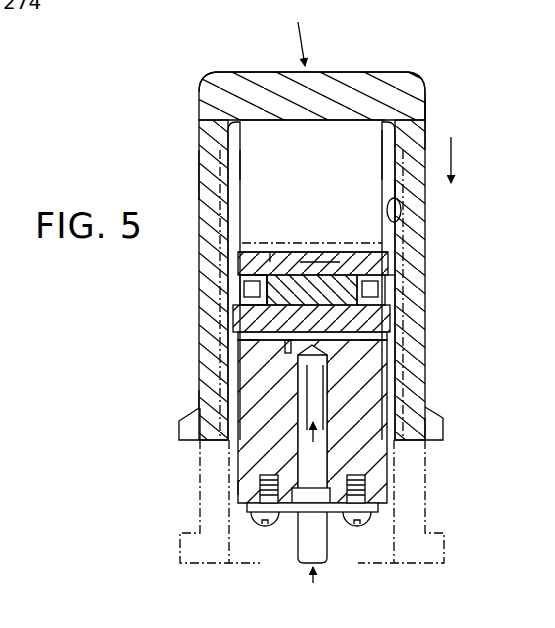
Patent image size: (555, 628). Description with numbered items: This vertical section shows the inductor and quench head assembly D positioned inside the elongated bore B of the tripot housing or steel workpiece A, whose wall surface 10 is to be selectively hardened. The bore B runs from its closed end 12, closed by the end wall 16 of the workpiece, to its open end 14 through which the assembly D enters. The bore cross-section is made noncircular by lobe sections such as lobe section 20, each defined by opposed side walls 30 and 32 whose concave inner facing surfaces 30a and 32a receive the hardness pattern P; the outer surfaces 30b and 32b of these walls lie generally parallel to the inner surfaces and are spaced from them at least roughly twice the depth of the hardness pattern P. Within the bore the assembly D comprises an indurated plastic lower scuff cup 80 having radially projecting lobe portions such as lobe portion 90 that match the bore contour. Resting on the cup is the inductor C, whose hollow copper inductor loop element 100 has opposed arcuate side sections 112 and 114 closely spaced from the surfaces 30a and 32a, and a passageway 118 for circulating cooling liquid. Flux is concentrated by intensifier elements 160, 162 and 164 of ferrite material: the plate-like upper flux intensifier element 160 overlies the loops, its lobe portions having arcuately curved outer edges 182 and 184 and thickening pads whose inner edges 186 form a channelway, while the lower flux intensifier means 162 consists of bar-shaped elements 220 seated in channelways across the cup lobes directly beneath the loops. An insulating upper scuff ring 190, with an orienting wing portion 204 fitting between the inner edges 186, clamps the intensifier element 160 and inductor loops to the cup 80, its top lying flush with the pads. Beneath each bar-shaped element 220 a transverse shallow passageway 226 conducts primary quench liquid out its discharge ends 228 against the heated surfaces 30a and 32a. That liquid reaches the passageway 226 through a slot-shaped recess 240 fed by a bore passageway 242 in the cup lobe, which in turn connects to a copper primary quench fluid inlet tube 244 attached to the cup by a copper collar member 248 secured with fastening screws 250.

The workpiece A is at (292, 33).
The elongated bore B is at (387, 138).
The inductor C is at (430, 296).
The inductor and quench head assembly D is at (230, 487).
The hardness pattern P is at (222, 398).
The wall surface 10 is at (402, 210).
The closed end 12 is at (226, 132).
The open end 14 is at (230, 452).
The end wall 16 is at (262, 80).
The lobe section 20 is at (325, 130).
The side wall 30 is at (205, 195).
The inner facing surface 30a is at (243, 165).
The outer surface 30b is at (205, 160).
The side wall 32 is at (412, 197).
The inner facing surface 32a is at (384, 166).
The outer surface 32b is at (430, 125).
The lower scuff cup 80 is at (375, 455).
The lobe portion 90 is at (370, 492).
The inductor loop element 100 is at (250, 310).
The arcuate side section 112 is at (256, 300).
The arcuate side section 114 is at (393, 302).
The passageway 118 is at (250, 290).
The flux intensifier element 160 is at (395, 252).
The lower flux intensifier means 162 is at (394, 353).
The flux intensifier element 164 is at (295, 272).
The arcuately curved outer edge 182 is at (245, 270).
The arcuately curved outer edge 184 is at (400, 285).
The inner edge 186 is at (262, 250).
The upper scuff ring 190 is at (307, 241).
The orienting wing portion 204 is at (326, 257).
The bar-shaped element 220 is at (395, 325).
The transverse shallow passageway 226 is at (235, 352).
The discharge end 228 is at (242, 340).
The slot-shaped recess 240 is at (340, 356).
The bore passageway 242 is at (325, 408).
The primary quench fluid inlet tube 244 is at (296, 558).
The copper collar member 248 is at (252, 510).
The fastening screw 250 is at (264, 525).